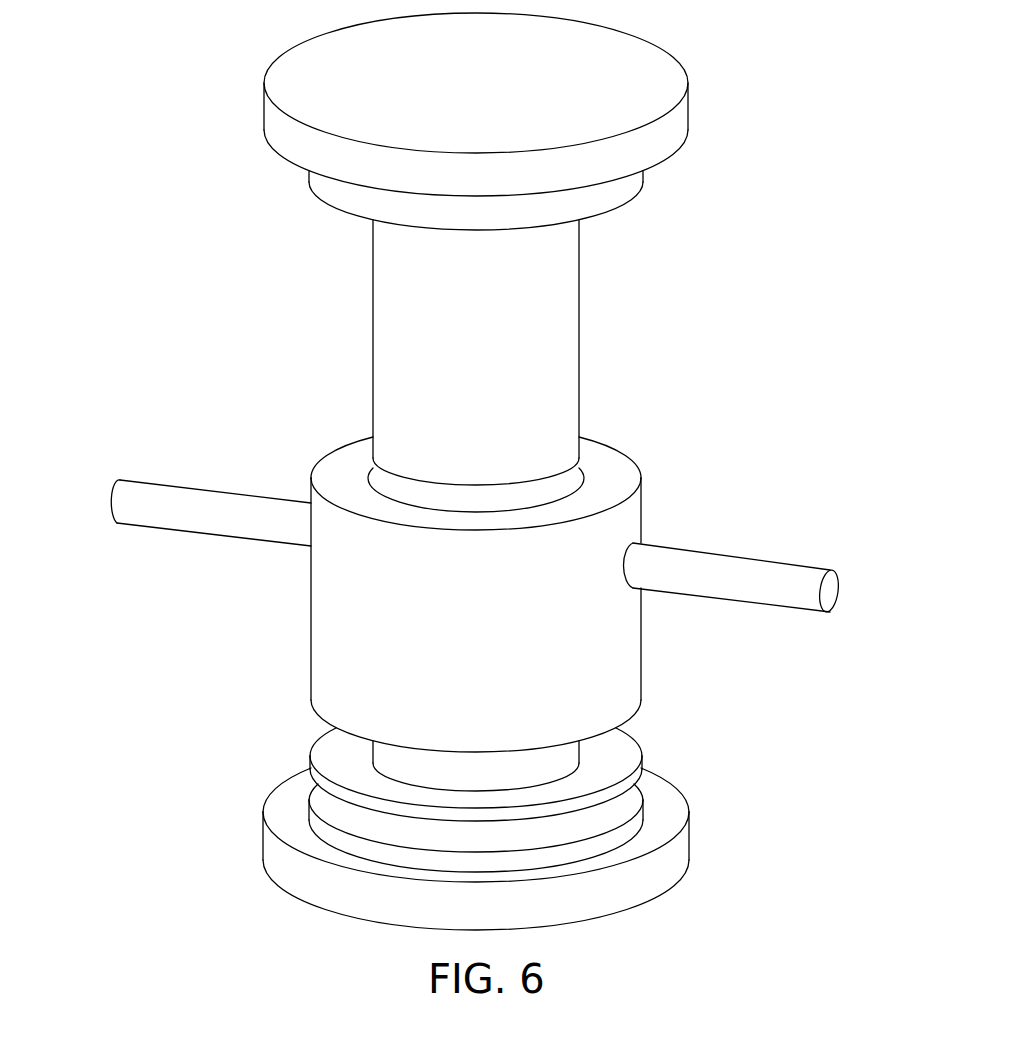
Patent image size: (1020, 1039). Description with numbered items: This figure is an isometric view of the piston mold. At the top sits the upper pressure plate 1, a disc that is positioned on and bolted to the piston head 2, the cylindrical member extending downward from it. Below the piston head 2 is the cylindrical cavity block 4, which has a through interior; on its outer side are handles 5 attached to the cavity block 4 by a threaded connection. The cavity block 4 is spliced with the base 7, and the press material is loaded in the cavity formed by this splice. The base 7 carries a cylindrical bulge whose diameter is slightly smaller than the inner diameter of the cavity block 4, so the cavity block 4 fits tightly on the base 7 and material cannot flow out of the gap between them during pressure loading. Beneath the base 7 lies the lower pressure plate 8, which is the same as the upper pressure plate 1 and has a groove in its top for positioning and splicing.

The upper pressure plate 1 is at (477, 173).
The piston head 2 is at (541, 287).
The cavity block 4 is at (640, 489).
The handle 5 is at (781, 580).
The base 7 is at (371, 764).
The lower pressure plate 8 is at (325, 882).